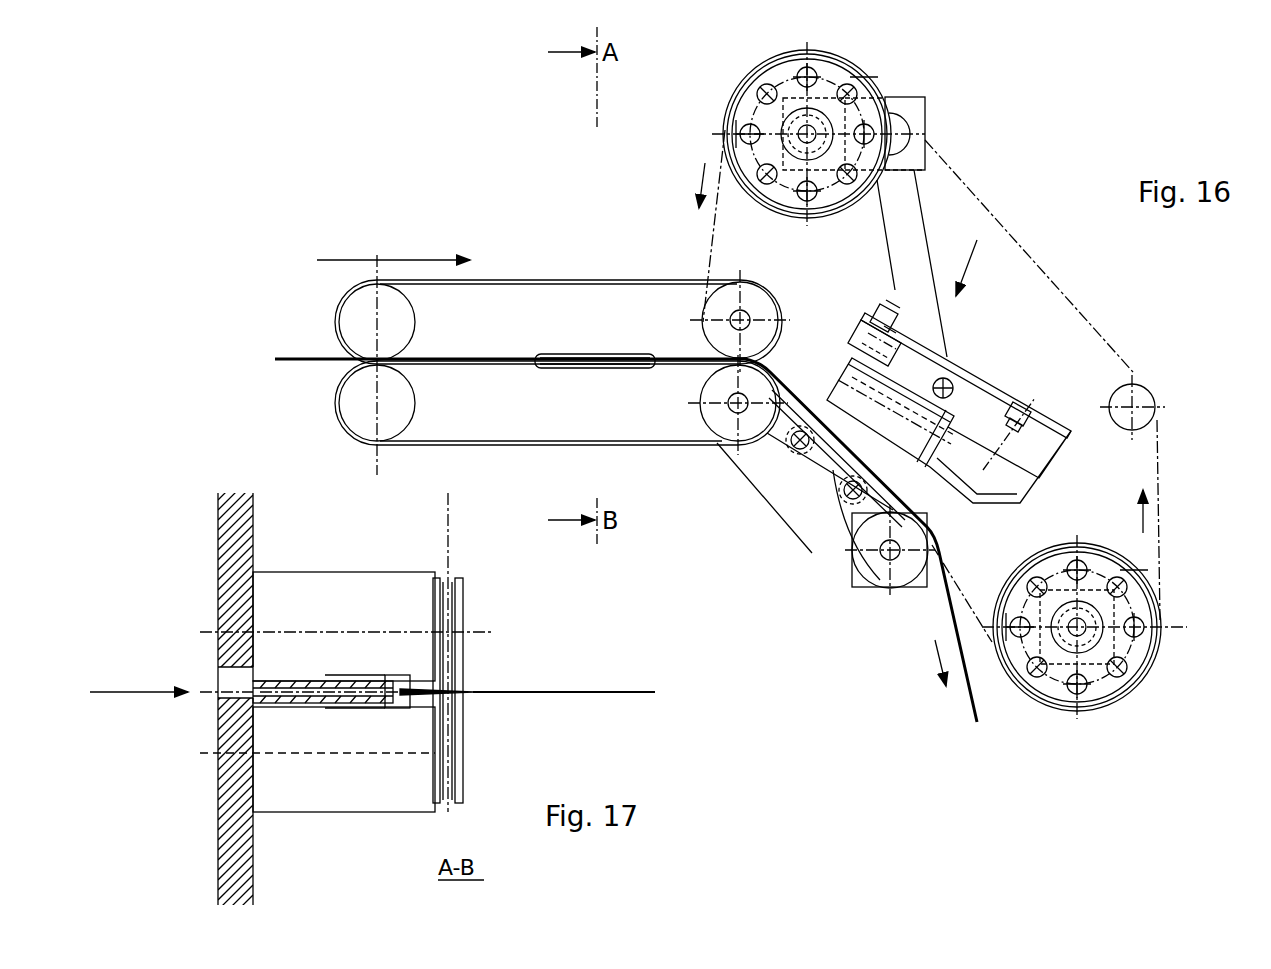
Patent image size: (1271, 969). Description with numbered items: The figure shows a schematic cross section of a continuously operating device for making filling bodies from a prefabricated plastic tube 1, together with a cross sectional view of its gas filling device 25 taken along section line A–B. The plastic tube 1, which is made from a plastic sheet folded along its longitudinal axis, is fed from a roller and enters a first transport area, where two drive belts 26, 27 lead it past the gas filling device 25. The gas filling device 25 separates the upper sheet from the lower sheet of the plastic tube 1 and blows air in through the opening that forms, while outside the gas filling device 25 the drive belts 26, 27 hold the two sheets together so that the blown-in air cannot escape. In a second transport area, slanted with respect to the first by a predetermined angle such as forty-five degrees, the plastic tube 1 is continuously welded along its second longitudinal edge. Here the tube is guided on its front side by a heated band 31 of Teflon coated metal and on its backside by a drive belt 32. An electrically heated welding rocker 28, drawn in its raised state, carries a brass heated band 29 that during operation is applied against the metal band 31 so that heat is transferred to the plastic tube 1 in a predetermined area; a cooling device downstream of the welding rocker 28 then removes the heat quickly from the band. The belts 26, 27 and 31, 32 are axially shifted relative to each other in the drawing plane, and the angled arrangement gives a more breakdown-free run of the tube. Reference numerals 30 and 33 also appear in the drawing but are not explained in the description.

In FIG. 16, the plastic tube 1 is at (305, 358).
In FIG. 17, the plastic tube 1 is at (540, 690).
In FIG. 16, the gas filling device 25 is at (598, 352).
In FIG. 17, the gas filling device 25 is at (190, 594).
In FIG. 16, the drive belt 26 is at (498, 443).
In FIG. 17, the drive belt 26 is at (467, 778).
In FIG. 16, the drive belt 27 is at (605, 280).
In FIG. 17, the drive belt 27 is at (463, 595).
In FIG. 16, the welding rocker 28 is at (893, 237).
In FIG. 16, the heated band 29 is at (852, 423).
In FIG. 16, the deflection roller 30 is at (1013, 483).
In FIG. 16, the heated band 31 is at (712, 236).
In FIG. 16, the drive belt 32 is at (827, 458).
In FIG. 17, the feed direction 33 is at (139, 669).